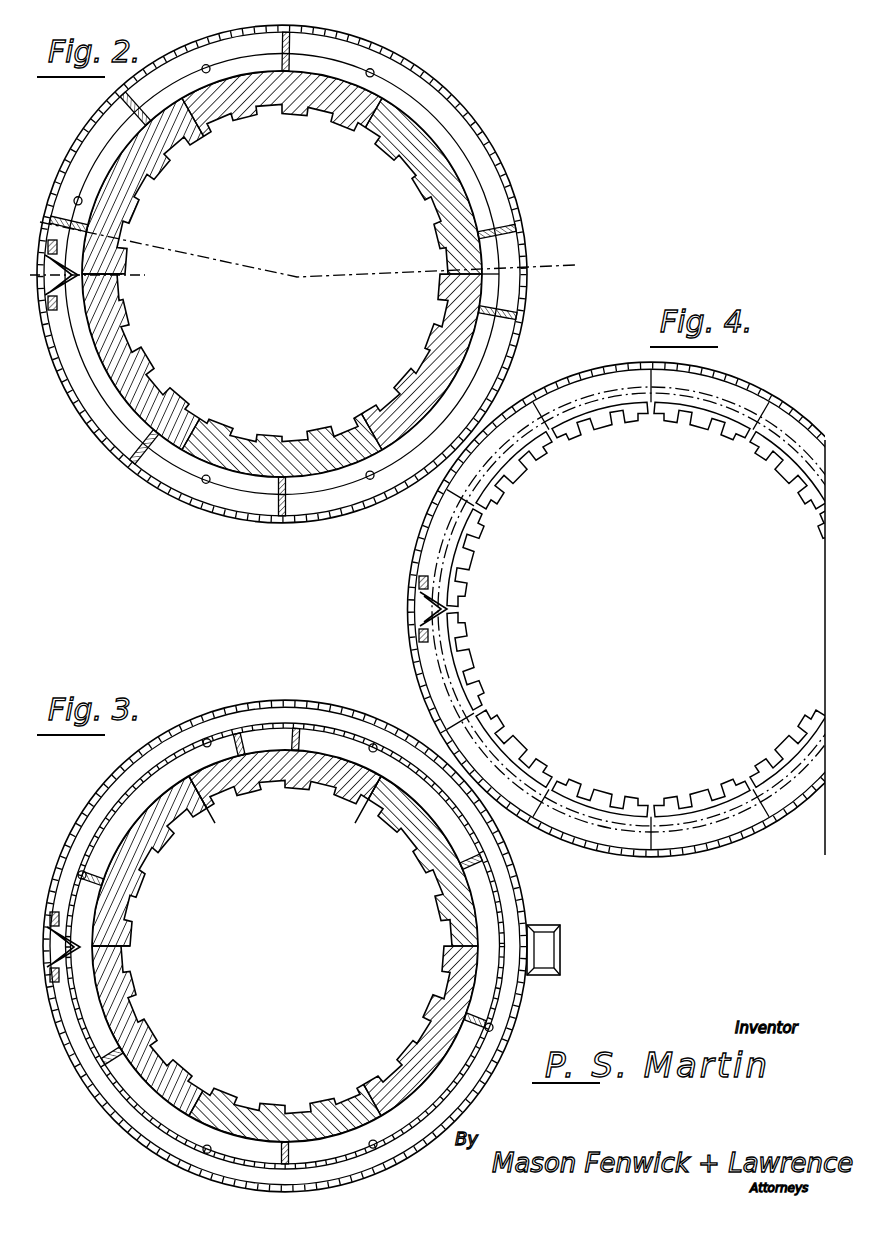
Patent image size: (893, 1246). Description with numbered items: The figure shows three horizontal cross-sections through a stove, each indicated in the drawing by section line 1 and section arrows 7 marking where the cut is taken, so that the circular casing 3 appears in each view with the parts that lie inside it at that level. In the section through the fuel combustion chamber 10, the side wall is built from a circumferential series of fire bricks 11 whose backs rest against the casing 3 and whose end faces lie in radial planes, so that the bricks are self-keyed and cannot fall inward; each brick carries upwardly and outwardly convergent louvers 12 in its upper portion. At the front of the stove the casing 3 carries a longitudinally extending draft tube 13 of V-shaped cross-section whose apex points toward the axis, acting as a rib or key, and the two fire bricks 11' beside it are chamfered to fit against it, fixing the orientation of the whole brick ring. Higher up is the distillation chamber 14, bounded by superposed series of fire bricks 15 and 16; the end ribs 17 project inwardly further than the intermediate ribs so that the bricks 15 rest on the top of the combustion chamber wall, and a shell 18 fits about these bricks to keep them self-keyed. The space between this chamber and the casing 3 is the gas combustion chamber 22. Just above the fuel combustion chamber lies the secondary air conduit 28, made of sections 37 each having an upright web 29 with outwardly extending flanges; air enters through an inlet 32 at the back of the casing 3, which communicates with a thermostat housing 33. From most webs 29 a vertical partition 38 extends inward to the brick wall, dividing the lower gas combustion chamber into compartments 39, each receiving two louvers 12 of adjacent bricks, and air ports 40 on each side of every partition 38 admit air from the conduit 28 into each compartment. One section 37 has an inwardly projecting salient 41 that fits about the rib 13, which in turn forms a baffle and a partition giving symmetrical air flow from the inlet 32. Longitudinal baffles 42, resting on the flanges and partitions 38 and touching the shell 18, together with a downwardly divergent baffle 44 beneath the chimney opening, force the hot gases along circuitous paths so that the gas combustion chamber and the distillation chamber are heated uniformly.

In FIG. 2, the section line 1 is at (573, 264).
In FIG. 2, the casing 3 is at (492, 162).
In FIG. 3, the casing 3 is at (522, 867).
In FIG. 4, the casing 3 is at (742, 372).
In FIG. 2, the section line 7 is at (150, 278).
In FIG. 4, the fuel combustion chamber 10 is at (500, 586).
In FIG. 4, the fire bricks 11 is at (665, 609).
In FIG. 4, the fire bricks adjacent the rib 11' is at (457, 571).
In FIG. 4, the louvers 12 is at (466, 568).
In FIG. 2, the draft tube 13 is at (60, 291).
In FIG. 3, the draft tube 13 is at (62, 947).
In FIG. 4, the draft tube 13 is at (512, 600).
In FIG. 2, the distillation chamber 14 is at (418, 227).
In FIG. 3, the distillation chamber 14 is at (430, 980).
In FIG. 3, the fire bricks 15 is at (296, 738).
In FIG. 2, the fire bricks 16 is at (435, 165).
In FIG. 4, the end ribs 17 is at (512, 468).
In FIG. 2, the shell 18 is at (494, 334).
In FIG. 2, the gas combustion chamber 22 is at (362, 44).
In FIG. 3, the gas combustion chamber 22 is at (237, 738).
In FIG. 3, the secondary air conduit 28 is at (118, 780).
In FIG. 3, the web 29 is at (100, 800).
In FIG. 3, the air inlet 32 is at (562, 958).
In FIG. 3, the thermostat housing 33 is at (562, 932).
In FIG. 2, the section 37 is at (196, 492).
In FIG. 3, the section 37 is at (302, 760).
In FIG. 3, the partition 38 is at (190, 790).
In FIG. 3, the compartments 39 is at (186, 765).
In FIG. 3, the air ports 40 is at (422, 1092).
In FIG. 2, the salient 41 is at (95, 263).
In FIG. 3, the salient 41 is at (92, 935).
In FIG. 2, the longitudinal baffles 42 is at (283, 52).
In FIG. 2, the downwardly divergent baffle 44 is at (498, 196).